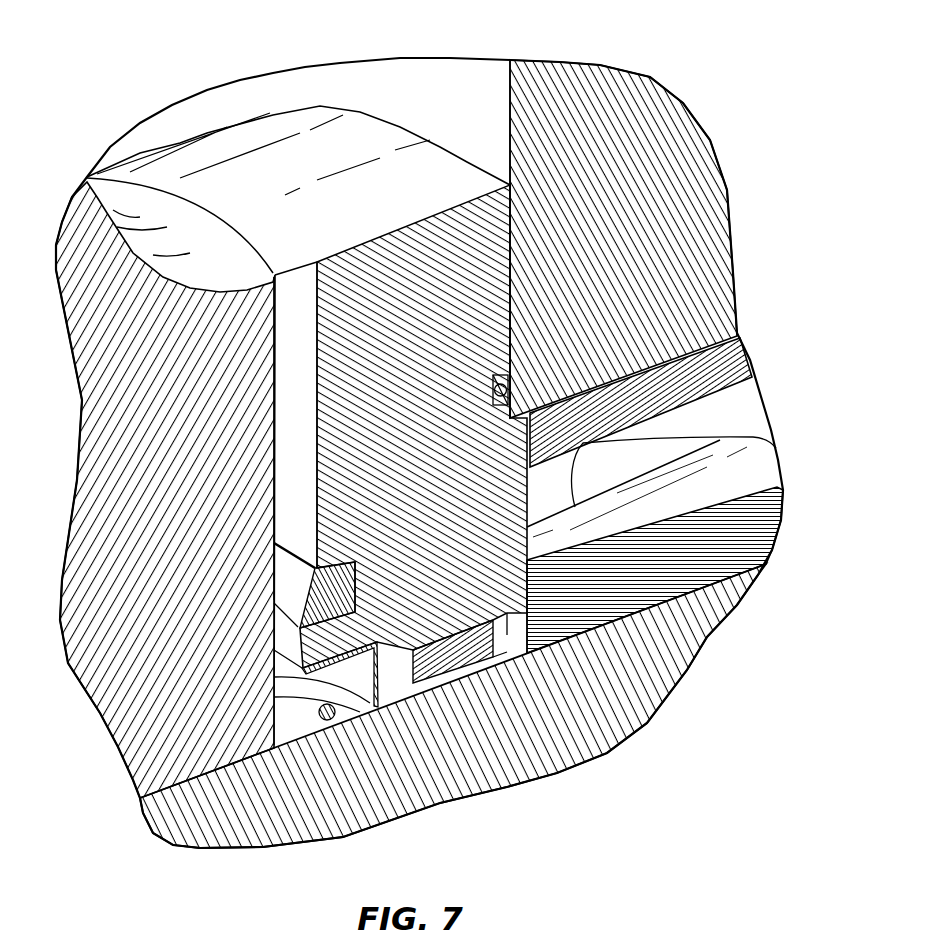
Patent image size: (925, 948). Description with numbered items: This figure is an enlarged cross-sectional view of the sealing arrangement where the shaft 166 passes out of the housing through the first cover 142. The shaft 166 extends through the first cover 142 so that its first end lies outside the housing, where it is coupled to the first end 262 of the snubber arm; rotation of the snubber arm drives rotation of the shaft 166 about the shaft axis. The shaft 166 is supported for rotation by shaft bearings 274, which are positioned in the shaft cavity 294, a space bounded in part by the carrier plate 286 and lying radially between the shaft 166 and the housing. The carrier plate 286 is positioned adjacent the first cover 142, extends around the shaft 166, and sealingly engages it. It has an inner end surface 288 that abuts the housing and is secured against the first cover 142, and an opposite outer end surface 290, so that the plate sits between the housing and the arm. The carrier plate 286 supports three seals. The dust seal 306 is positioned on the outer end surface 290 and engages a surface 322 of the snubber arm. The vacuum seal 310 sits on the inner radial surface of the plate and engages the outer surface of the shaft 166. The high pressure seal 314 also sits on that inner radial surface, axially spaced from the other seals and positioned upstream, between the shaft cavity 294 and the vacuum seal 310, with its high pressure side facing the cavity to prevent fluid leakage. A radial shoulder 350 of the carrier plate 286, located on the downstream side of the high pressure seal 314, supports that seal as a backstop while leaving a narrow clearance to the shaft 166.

The first cover 142 is at (667, 168).
The shaft 166 is at (425, 778).
The first end of the snubber arm 262 is at (160, 723).
The shaft bearings 274 is at (746, 534).
The carrier plate 286 is at (437, 290).
The inner end surface 288 is at (510, 225).
The outer end surface 290 is at (310, 323).
The shaft cavity 294 is at (357, 663).
The dust seal 306 is at (372, 572).
The vacuum seal 310 is at (455, 690).
The high pressure seal 314 is at (528, 658).
The surface of the snubber arm 322 is at (277, 455).
The radial shoulder 350 is at (393, 680).